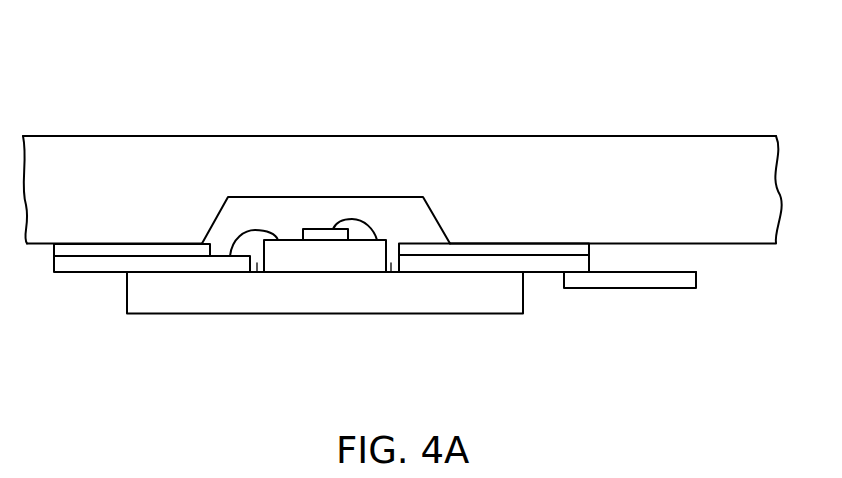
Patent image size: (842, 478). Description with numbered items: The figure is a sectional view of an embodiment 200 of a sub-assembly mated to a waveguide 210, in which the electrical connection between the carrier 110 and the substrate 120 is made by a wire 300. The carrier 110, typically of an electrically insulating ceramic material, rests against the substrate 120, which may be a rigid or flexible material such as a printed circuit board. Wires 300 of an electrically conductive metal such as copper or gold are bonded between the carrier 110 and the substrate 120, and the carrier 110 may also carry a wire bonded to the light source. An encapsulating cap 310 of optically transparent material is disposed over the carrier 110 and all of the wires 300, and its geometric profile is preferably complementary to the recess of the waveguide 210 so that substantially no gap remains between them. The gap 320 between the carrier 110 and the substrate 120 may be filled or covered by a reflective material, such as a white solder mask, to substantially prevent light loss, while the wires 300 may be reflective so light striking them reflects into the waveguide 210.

The semiconductor package 200 is at (128, 65).
The carrier 110 is at (333, 254).
The substrate 120 is at (94, 263).
The waveguide 210 is at (723, 157).
The wire 300 is at (264, 232).
The encapsulating cap 310 is at (398, 217).
The gap 320 is at (257, 263).